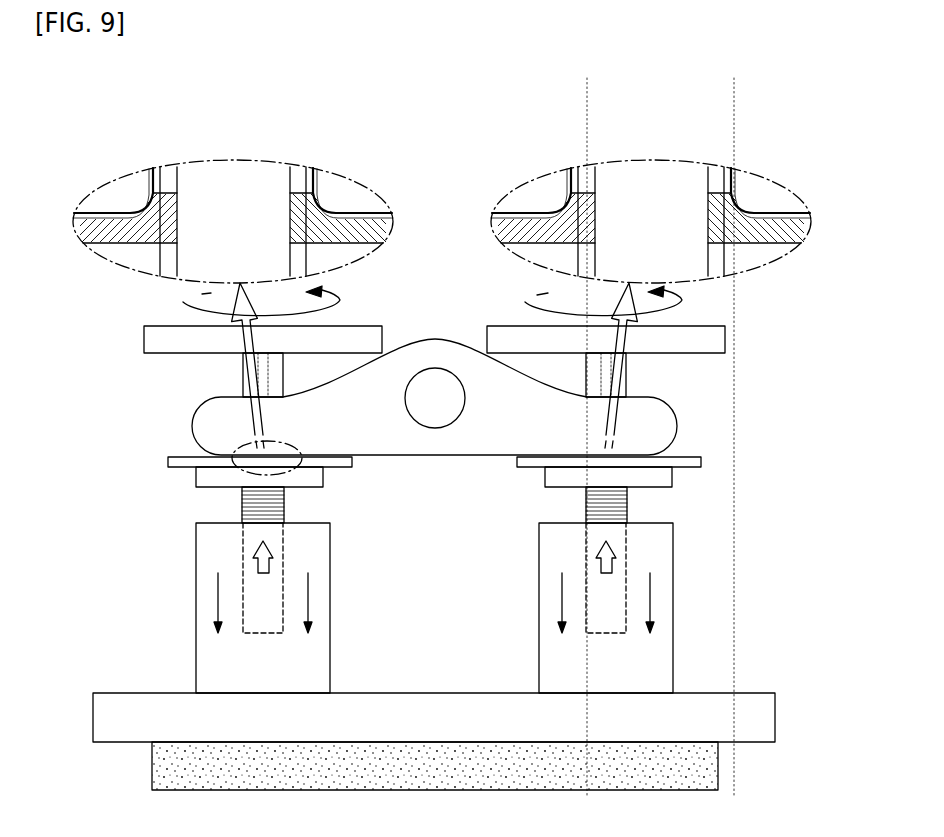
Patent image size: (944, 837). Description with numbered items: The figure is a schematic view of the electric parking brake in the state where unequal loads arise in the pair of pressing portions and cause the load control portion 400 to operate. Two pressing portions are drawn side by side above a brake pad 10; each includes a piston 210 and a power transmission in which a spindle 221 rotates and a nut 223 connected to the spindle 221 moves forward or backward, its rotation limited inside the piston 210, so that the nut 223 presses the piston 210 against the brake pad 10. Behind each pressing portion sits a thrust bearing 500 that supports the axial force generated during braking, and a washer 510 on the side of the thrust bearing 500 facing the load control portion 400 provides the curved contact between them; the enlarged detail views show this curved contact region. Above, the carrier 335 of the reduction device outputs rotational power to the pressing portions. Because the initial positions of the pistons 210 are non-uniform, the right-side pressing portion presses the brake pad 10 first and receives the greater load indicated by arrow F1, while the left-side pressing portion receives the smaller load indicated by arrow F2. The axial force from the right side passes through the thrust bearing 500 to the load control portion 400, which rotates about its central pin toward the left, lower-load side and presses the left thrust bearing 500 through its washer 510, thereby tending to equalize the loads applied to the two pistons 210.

The brake pad 10 is at (762, 718).
The piston 210 is at (663, 607).
The spindle 221 is at (242, 388).
The nut 223 is at (504, 608).
The carrier 335 is at (150, 342).
The load control portion 400 is at (753, 183).
The thrust bearing 500 is at (752, 262).
The washer 510 is at (700, 463).
The arrow F1 is at (615, 558).
The arrow F2 is at (270, 567).